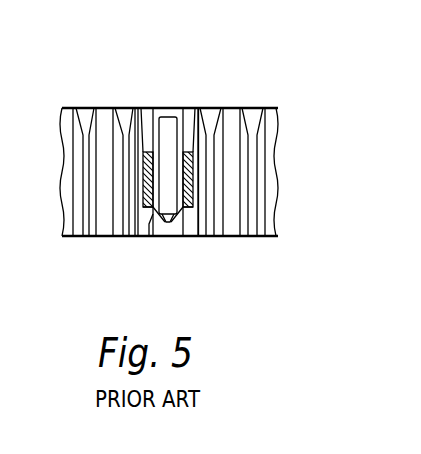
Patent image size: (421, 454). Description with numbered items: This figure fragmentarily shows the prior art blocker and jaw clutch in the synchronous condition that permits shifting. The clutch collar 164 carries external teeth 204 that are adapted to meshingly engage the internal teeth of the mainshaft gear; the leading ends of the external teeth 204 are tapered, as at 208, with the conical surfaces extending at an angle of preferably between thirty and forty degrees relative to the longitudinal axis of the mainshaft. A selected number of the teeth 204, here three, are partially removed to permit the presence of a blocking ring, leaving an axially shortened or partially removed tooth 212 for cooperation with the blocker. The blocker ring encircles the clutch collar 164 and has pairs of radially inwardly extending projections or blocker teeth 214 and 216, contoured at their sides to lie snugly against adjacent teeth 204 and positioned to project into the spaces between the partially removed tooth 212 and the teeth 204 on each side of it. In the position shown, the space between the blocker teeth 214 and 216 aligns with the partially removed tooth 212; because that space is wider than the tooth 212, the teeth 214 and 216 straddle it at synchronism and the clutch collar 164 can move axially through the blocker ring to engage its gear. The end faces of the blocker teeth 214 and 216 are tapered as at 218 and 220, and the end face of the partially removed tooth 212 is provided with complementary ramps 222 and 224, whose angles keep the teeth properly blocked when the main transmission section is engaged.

The clutch collar 164 is at (279, 102).
The external teeth 204 is at (137, 244).
The taper 208 is at (210, 122).
The partially removed tooth 212 is at (168, 224).
The blocker tooth 214 is at (186, 150).
The blocker tooth 216 is at (153, 150).
The taper 218 is at (185, 208).
The taper 220 is at (147, 222).
The ramp 222 is at (199, 220).
The ramp 224 is at (149, 228).